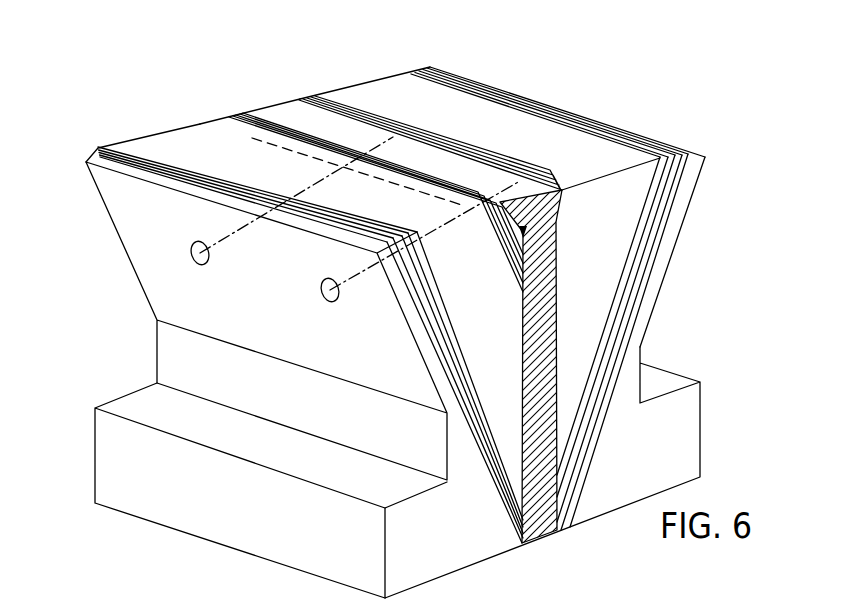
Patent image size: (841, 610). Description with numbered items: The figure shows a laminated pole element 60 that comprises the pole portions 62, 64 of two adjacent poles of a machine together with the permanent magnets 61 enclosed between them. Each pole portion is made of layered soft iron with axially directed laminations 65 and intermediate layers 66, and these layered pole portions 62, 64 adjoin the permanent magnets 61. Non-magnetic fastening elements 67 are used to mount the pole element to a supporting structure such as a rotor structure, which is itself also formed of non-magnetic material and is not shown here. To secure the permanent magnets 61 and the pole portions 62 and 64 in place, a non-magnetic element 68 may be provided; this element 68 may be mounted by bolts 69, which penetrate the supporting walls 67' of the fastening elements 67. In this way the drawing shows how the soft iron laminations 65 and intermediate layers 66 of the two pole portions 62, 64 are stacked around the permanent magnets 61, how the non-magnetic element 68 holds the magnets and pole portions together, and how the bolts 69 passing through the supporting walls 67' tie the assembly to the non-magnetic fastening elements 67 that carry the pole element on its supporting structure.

The base 60 is at (384, 472).
The permanent magnets 61 is at (553, 357).
The pole portion 62 is at (387, 86).
The pole portion 64 is at (205, 130).
The axially directed laminations 65 is at (133, 145).
The intermediate layers 66 is at (203, 173).
The non-magnetic fastening elements 67 is at (226, 490).
The supporting walls 67' is at (546, 348).
The non-magnetic element 68 is at (287, 118).
The bolts 69 is at (250, 258).